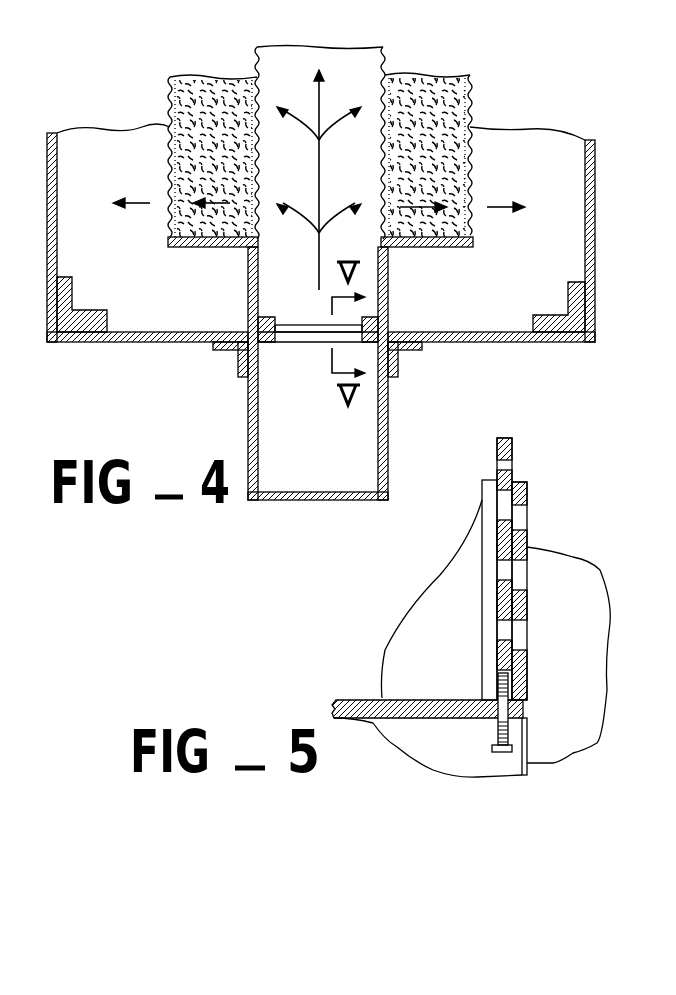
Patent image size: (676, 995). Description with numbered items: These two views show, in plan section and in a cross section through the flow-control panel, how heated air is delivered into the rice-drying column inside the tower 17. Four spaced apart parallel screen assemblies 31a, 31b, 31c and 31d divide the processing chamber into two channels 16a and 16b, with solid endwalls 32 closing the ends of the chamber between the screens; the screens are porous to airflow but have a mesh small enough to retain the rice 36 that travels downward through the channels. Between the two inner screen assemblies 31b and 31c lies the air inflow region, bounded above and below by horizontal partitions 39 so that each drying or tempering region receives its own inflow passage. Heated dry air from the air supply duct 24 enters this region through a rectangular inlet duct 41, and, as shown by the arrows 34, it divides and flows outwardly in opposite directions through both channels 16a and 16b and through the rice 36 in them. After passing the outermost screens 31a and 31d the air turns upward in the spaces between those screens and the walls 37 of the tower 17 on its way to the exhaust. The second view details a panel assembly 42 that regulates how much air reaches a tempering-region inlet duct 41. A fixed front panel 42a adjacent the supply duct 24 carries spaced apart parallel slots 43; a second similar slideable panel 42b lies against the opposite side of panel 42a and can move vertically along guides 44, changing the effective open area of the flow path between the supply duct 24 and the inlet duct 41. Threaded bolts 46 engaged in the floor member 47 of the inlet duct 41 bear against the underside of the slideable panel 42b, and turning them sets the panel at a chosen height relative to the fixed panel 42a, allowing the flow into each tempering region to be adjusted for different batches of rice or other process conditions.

In FIG. 4, the processing chamber channel 16a is at (482, 147).
In FIG. 4, the processing chamber channel 16b is at (172, 173).
In FIG. 4, the tower 17 is at (146, 361).
In FIG. 4, the air supply duct 24 is at (258, 420).
In FIG. 5, the air supply duct 24 is at (585, 680).
In FIG. 4, the screen assembly 31a is at (473, 158).
In FIG. 4, the screen assembly 31b is at (383, 135).
In FIG. 4, the screen assembly 31c is at (258, 183).
In FIG. 4, the screen assembly 31d is at (170, 173).
In FIG. 4, the solid endwall 32 is at (217, 248).
In FIG. 4, the arrows 34 is at (310, 226).
In FIG. 4, the rice 36 is at (433, 148).
In FIG. 4, the wall of tower 37 is at (57, 203).
In FIG. 4, the horizontal partition 39 is at (303, 302).
In FIG. 4, the inlet duct 41 is at (388, 283).
In FIG. 5, the inlet duct 41 is at (451, 638).
In FIG. 5, the panel assembly 42 is at (517, 548).
In FIG. 5, the fixed front panel 42a is at (528, 490).
In FIG. 5, the slideable panel 42b is at (505, 450).
In FIG. 5, the slot 43 is at (527, 527).
In FIG. 5, the guide 44 is at (490, 501).
In FIG. 5, the threaded bolt 46 is at (497, 732).
In FIG. 5, the floor member 47 is at (382, 698).